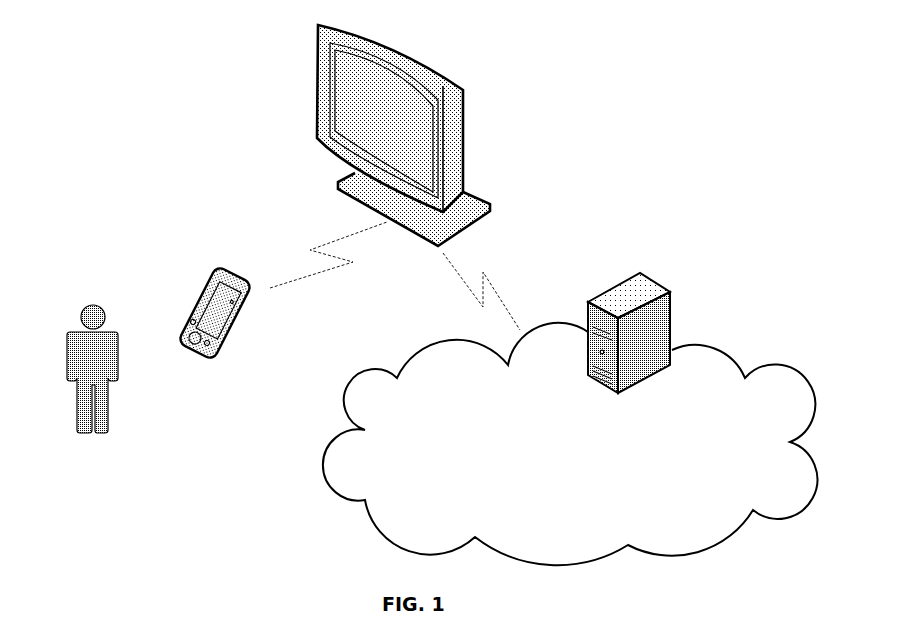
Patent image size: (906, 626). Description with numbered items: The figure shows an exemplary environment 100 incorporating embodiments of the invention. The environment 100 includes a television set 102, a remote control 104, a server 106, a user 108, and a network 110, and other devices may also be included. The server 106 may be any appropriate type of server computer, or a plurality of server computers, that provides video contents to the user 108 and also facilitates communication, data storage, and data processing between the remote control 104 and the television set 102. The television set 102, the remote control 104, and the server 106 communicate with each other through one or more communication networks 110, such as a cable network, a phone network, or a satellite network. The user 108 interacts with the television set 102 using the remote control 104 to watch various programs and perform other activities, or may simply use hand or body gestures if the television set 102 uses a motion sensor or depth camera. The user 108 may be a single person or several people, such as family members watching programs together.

The environment 100 is at (160, 20).
The television set 102 is at (463, 108).
The remote control 104 is at (235, 338).
The server 106 is at (668, 333).
The user 108 is at (108, 423).
The network 110 is at (431, 430).